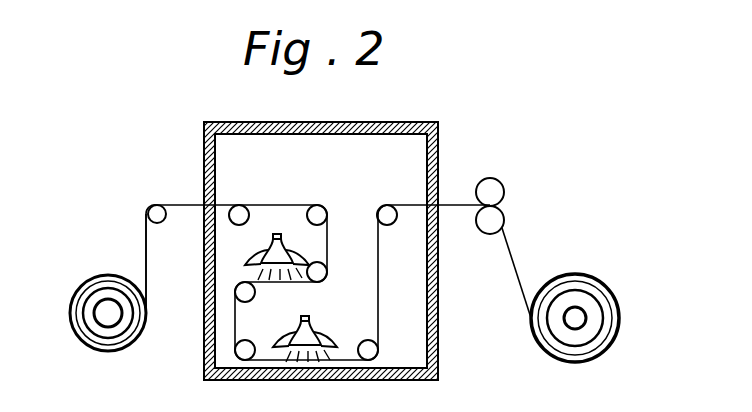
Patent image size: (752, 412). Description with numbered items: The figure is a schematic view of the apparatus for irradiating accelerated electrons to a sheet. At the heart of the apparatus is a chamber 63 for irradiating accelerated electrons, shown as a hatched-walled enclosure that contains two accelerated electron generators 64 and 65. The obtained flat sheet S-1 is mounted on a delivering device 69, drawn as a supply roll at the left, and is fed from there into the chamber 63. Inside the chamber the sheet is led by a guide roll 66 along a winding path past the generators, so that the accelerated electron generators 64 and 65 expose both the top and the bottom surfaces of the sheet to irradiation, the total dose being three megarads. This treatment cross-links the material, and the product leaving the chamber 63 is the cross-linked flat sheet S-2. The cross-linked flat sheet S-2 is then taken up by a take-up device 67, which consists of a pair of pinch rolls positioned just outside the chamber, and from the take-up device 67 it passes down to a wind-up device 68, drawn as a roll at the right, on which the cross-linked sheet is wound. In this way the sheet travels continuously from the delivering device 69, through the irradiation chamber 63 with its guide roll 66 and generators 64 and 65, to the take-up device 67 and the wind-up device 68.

The chamber for irradiating accelerated electrons 63 is at (373, 146).
The accelerated electron generator 64 is at (266, 258).
The accelerated electron generator 65 is at (320, 337).
The guide roll 66 is at (240, 206).
The take-up device 67 is at (493, 190).
The wind-up device 68 is at (578, 316).
The delivering device 69 is at (104, 310).
The flat sheet S-1 is at (147, 253).
The cross-linked flat sheet S-2 is at (519, 248).